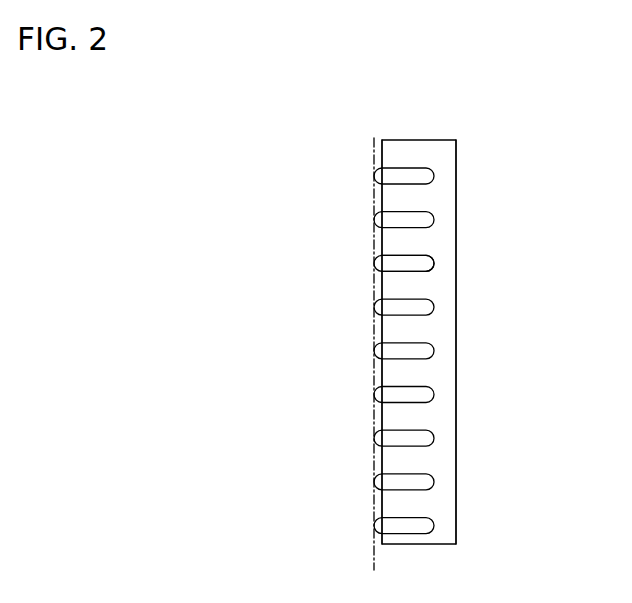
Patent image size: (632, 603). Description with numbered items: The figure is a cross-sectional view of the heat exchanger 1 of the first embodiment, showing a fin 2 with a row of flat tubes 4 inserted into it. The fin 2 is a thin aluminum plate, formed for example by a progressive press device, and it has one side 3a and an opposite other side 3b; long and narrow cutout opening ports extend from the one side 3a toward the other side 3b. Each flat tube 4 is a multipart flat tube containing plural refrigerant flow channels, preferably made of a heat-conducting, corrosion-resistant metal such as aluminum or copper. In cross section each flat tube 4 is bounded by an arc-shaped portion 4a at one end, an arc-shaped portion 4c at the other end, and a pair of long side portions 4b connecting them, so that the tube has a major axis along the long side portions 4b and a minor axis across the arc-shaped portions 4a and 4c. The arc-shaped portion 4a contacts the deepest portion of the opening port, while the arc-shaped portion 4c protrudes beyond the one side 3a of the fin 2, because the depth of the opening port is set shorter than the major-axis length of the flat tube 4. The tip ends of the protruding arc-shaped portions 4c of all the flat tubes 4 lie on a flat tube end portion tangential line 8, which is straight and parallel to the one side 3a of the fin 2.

The sealing member 1 is at (470, 199).
The fin 2 is at (438, 371).
The one side 3a is at (378, 377).
The other side 3b is at (456, 303).
The flat tube 4 is at (378, 218).
The arc-shaped portion 4a is at (434, 264).
The long side portions 4b is at (403, 273).
The arc-shaped portion 4c is at (375, 260).
The flat tube end portion tangential line 8 is at (371, 548).